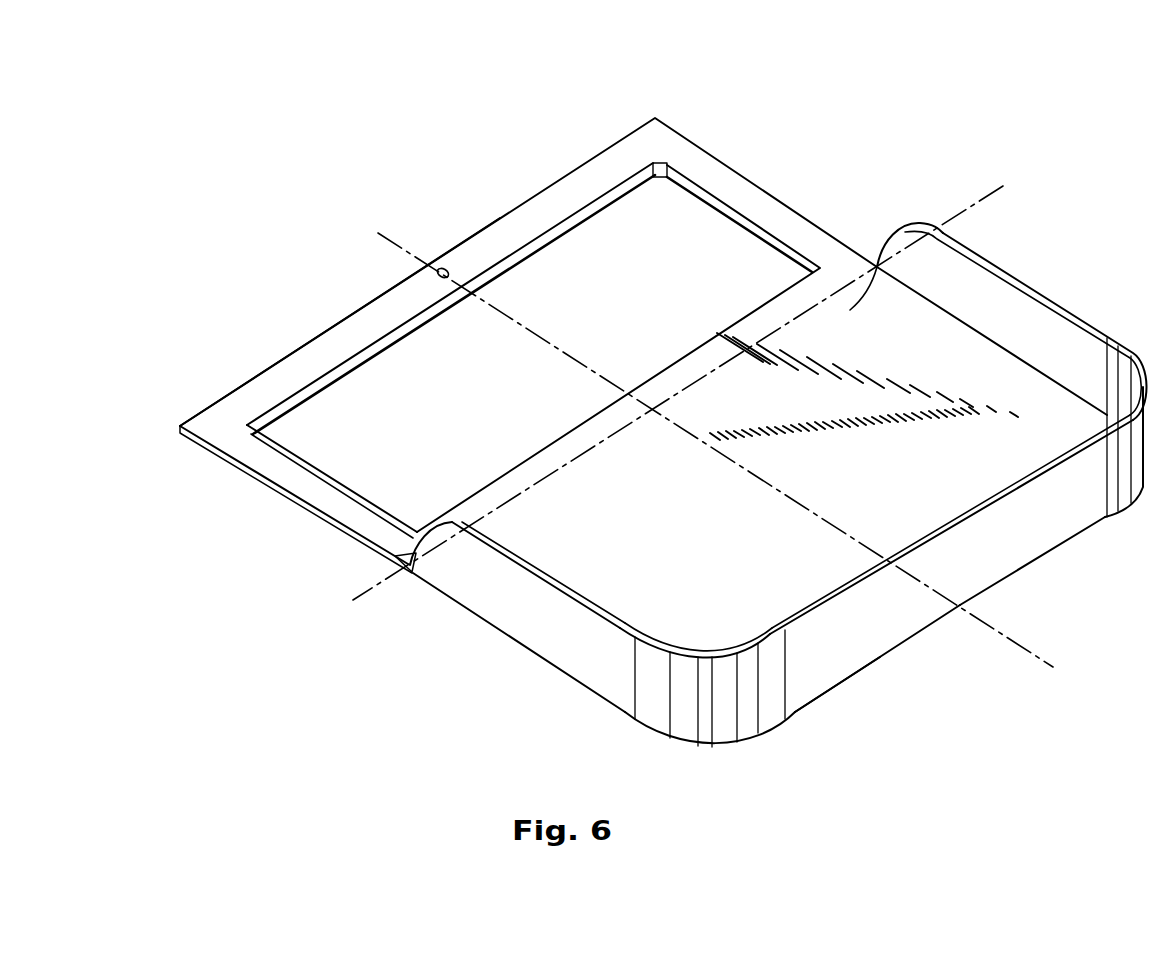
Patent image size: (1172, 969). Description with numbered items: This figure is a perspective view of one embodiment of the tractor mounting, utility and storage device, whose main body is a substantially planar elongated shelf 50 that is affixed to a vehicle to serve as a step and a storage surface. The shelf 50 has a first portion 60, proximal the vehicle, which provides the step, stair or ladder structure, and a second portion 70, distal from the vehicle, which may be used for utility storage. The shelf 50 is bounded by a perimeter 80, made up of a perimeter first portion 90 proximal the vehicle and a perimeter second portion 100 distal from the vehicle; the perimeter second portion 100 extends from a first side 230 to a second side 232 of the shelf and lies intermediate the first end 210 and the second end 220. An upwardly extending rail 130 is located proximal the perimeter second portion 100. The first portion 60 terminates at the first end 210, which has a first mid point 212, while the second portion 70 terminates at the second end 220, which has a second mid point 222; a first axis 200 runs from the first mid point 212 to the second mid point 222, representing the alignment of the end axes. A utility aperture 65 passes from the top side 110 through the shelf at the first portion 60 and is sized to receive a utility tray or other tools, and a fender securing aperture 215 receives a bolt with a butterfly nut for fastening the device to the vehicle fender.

The substantially planar elongated shelf 50 is at (875, 268).
The first portion 60 is at (623, 160).
The utility aperture 65 is at (685, 227).
The second portion 70 is at (957, 487).
The perimeter 80 is at (602, 668).
The perimeter first portion 90 is at (328, 330).
The perimeter second portion 100 is at (467, 588).
The top side 110 is at (590, 507).
The upwardly extending rail 130 is at (708, 718).
The first axis 200 is at (393, 240).
The first end 210 is at (237, 387).
The first mid point 212 is at (434, 264).
The fender securing aperture 215 is at (450, 272).
The second end 220 is at (822, 658).
The second mid point 222 is at (970, 610).
The first side 230 is at (877, 267).
The second side 232 is at (437, 540).